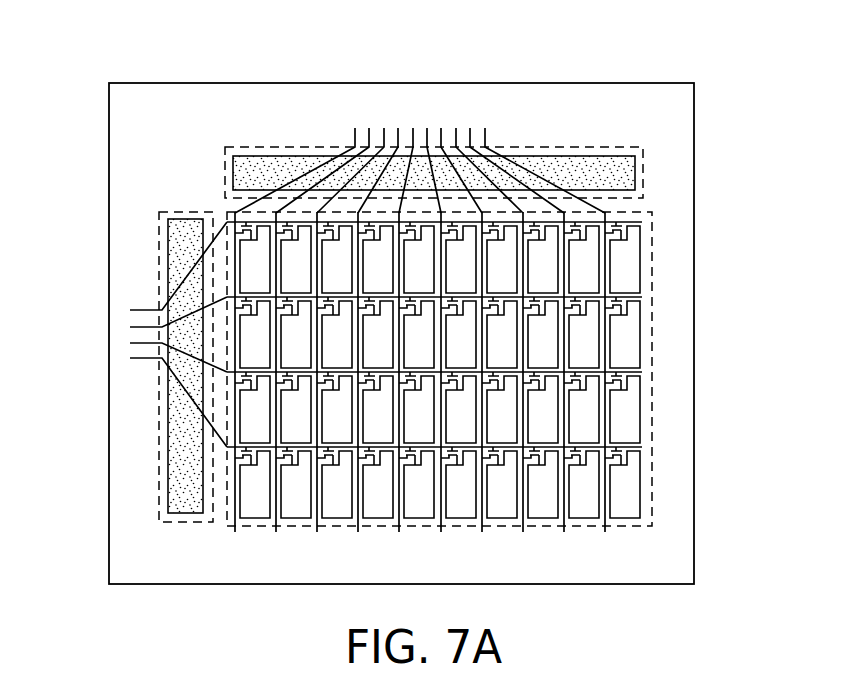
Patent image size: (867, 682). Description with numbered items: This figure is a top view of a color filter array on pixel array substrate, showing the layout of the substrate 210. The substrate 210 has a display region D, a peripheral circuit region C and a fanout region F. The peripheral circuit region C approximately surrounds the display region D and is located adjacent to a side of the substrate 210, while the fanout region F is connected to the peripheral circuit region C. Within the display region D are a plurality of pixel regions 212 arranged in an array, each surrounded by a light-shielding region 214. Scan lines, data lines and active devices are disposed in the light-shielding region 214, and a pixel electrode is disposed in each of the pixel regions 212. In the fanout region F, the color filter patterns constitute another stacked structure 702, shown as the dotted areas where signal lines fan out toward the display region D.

The substrate 210 is at (664, 572).
The pixel regions 212 is at (583, 345).
The light-shielding region 214 is at (567, 322).
The stacked structure 702 is at (233, 168).
The peripheral circuit region C is at (286, 132).
The fanout region F is at (581, 147).
The display region D is at (655, 237).